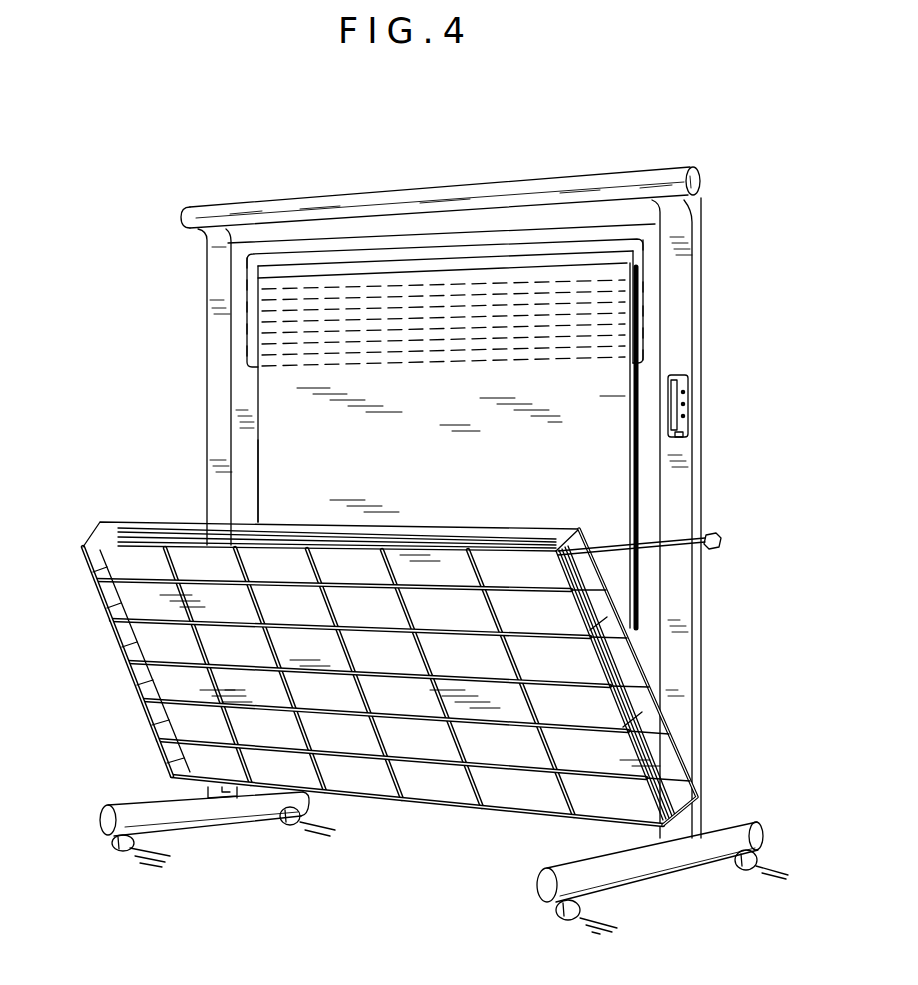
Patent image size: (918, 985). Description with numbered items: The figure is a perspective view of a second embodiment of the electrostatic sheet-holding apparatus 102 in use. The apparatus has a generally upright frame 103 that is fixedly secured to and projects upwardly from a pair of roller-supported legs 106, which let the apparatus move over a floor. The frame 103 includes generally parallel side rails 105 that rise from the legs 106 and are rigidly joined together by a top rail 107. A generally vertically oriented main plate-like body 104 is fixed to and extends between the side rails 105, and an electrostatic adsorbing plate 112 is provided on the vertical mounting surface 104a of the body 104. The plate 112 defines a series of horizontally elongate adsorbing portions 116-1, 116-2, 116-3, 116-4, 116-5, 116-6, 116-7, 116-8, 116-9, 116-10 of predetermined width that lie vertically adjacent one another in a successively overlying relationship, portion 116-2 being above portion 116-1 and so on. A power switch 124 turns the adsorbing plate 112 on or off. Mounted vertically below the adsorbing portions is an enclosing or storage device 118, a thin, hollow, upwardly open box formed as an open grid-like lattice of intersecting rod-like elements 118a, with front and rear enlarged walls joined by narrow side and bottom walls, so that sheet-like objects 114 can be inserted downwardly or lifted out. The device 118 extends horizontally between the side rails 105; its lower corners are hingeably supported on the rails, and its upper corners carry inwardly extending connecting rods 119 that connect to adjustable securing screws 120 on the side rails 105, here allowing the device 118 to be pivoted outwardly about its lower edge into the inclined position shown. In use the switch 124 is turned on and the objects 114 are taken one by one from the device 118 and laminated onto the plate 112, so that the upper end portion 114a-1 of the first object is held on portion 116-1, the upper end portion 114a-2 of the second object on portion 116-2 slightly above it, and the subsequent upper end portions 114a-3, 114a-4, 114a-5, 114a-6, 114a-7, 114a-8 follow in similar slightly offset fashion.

The electrostatic sheet-holding apparatus 102 is at (654, 108).
The top rail 107 is at (661, 179).
The electrostatic adsorbing plate 112 is at (698, 171).
The main plate-like body 104 is at (242, 442).
The side rails 105 is at (216, 403).
The vertical mounting surface 104a is at (252, 472).
The sheet-like object 114 is at (598, 484).
The upper end portion of first object 114a-1 is at (512, 357).
The upper end portion of second object 114a-2 is at (520, 346).
The upper end portion of third object 114a-3 is at (478, 336).
The upper end portion of fourth object 114a-4 is at (428, 324).
The upper end portion of fifth object 114a-5 is at (378, 313).
The upper end portion of sixth object 114a-6 is at (345, 302).
The upper end portion of seventh object 114a-7 is at (302, 292).
The upper end portion of eighth object 114a-8 is at (280, 283).
The first adsorbing portion 116-1 is at (637, 357).
The second adsorbing portion 116-2 is at (250, 351).
The third adsorbing portion 116-3 is at (637, 334).
The fourth adsorbing portion 116-4 is at (250, 329).
The fifth adsorbing portion 116-5 is at (637, 311).
The sixth adsorbing portion 116-6 is at (250, 307).
The seventh adsorbing portion 116-7 is at (637, 287).
The eighth adsorbing portion 116-8 is at (250, 285).
The ninth adsorbing portion 116-9 is at (650, 244).
The tenth adsorbing portion 116-10 is at (250, 262).
The upright frame 103 is at (705, 405).
The power switch 124 is at (688, 433).
The enclosing device 118 is at (423, 701).
The tray wires 118a is at (500, 812).
The connecting rods 119 is at (677, 545).
The adjustable securing screws 120 is at (722, 541).
The roller-supported legs 106 is at (197, 812).